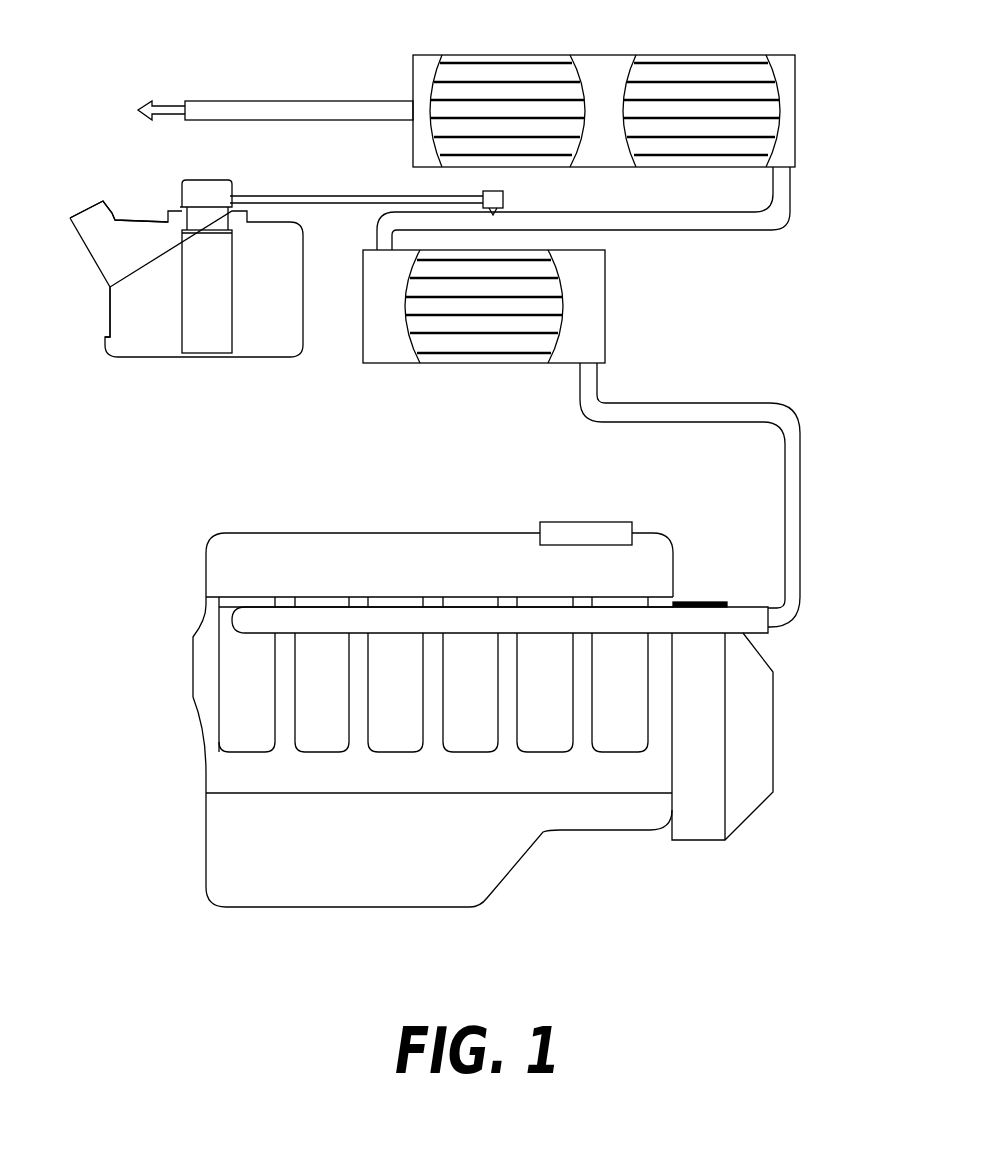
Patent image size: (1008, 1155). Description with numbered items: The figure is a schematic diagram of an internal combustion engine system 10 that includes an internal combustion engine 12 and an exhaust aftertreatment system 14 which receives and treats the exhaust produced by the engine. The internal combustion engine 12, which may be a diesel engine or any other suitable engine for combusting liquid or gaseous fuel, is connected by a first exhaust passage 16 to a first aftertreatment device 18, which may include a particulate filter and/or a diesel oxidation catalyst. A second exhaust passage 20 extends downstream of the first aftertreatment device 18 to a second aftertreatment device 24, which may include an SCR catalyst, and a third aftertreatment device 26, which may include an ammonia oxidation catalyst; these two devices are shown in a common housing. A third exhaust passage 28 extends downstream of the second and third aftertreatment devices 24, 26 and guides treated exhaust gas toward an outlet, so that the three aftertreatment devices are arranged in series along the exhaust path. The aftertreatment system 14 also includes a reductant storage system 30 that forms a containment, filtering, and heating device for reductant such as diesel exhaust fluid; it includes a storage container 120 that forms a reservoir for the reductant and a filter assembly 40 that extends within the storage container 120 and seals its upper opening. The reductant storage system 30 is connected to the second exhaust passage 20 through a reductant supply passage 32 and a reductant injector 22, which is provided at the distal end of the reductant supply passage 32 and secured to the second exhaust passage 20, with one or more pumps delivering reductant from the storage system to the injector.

The internal combustion engine system 10 is at (102, 40).
The internal combustion engine 12 is at (203, 713).
The exhaust aftertreatment system 14 is at (804, 234).
The first exhaust passage 16 is at (793, 468).
The first aftertreatment device 18 is at (540, 272).
The second exhaust passage 20 is at (705, 224).
The reductant injector 22 is at (497, 200).
The second aftertreatment device 24 is at (683, 86).
The third aftertreatment device 26 is at (482, 86).
The third exhaust passage 28 is at (202, 110).
The reductant storage system 30 is at (172, 267).
The reductant supply passage 32 is at (333, 200).
The filter assembly 40 is at (176, 310).
The storage container 120 is at (118, 300).